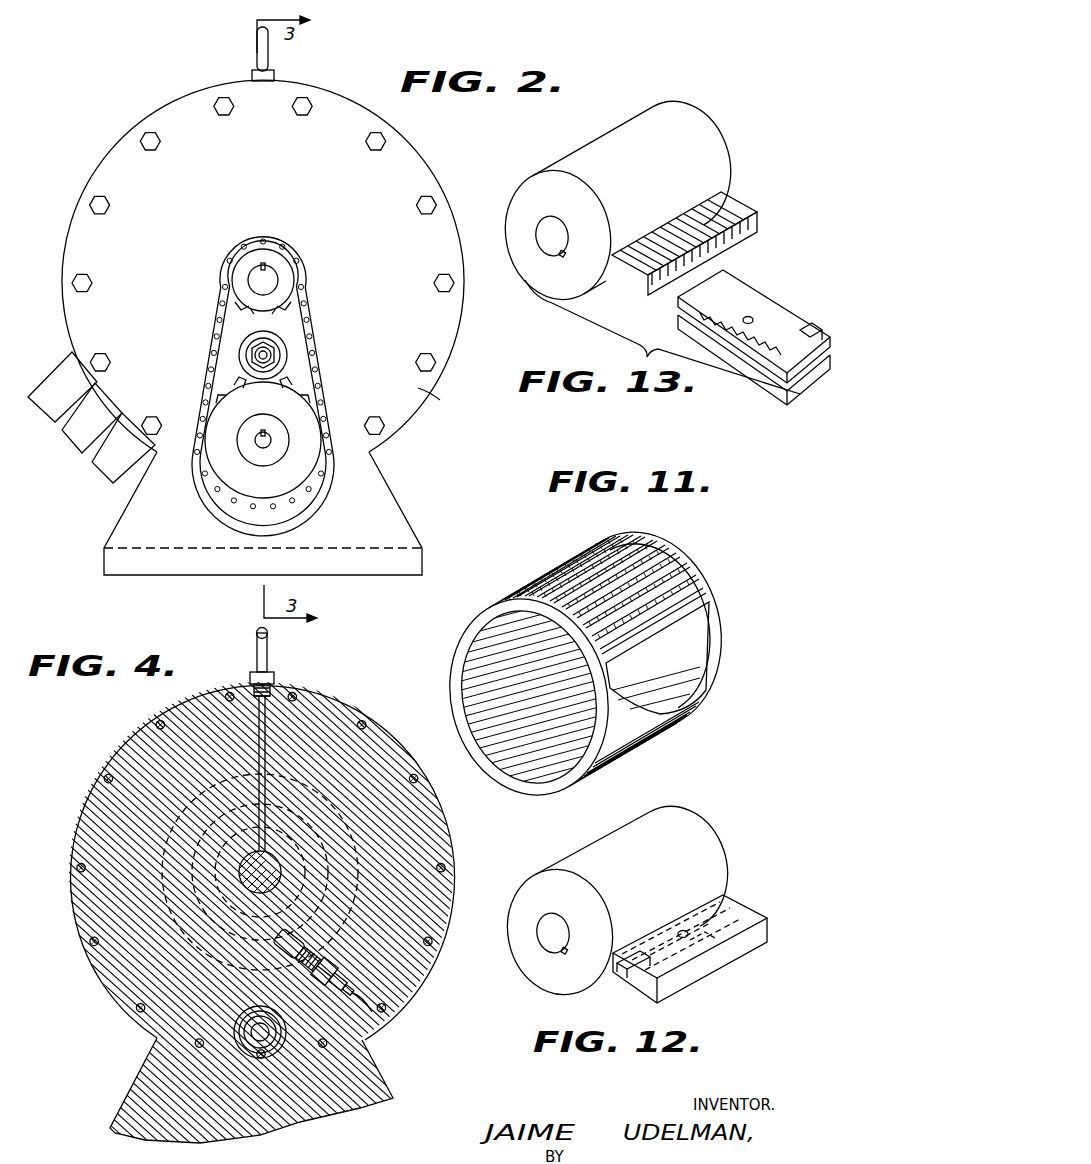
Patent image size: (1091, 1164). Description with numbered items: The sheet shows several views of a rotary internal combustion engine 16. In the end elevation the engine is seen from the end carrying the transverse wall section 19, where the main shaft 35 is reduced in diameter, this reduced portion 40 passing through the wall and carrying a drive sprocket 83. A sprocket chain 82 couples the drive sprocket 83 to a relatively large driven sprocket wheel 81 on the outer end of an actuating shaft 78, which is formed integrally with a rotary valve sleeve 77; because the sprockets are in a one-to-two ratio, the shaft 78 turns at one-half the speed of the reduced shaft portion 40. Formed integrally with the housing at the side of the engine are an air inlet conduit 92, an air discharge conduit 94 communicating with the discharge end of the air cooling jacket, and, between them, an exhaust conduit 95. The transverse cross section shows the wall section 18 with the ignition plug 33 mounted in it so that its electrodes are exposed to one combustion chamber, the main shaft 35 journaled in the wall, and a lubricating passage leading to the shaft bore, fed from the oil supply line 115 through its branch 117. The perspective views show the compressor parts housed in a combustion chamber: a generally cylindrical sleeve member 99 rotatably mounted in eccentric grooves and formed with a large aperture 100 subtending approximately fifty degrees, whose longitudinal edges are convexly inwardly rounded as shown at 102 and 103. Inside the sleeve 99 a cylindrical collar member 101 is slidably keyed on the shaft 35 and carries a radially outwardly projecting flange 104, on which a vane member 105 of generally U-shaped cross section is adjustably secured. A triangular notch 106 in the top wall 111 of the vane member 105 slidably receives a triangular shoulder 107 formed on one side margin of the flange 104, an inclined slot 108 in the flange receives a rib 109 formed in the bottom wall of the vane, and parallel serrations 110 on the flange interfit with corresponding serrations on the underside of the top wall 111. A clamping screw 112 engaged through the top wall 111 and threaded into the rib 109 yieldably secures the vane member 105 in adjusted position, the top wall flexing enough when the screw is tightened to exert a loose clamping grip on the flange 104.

In FIG. 2, the rotary internal combustion engine 16 is at (108, 146).
In FIG. 2, the wall section 19 is at (442, 402).
In FIG. 2, the reduced portion of main shaft 40 is at (273, 272).
In FIG. 2, the drive sprocket 83 is at (243, 272).
In FIG. 2, the sprocket chain 82 is at (320, 350).
In FIG. 2, the driven sprocket wheel 81 is at (228, 468).
In FIG. 2, the actuating shaft 78 is at (268, 443).
In FIG. 2, the air discharge conduit 94 is at (63, 370).
In FIG. 2, the exhaust conduit 95 is at (82, 432).
In FIG. 2, the air inlet conduit 92 is at (112, 463).
In FIG. 4, the wall section 18 is at (418, 890).
In FIG. 4, the branch of oil supply line 117 is at (270, 666).
In FIG. 4, the oil supply line 115 is at (258, 631).
In FIG. 4, the main shaft 35 is at (284, 868).
In FIG. 4, the clamping screw 112 is at (263, 797).
In FIG. 13, the clamping screw 112 is at (750, 316).
In FIG. 12, the clamping screw 112 is at (682, 930).
In FIG. 4, the rotary valve sleeve 77 is at (246, 1008).
In FIG. 4, the ignition plug 33 is at (372, 1012).
In FIG. 13, the cylindrical collar member 101 is at (690, 142).
In FIG. 12, the cylindrical collar member 101 is at (528, 968).
In FIG. 13, the flange 104 is at (760, 228).
In FIG. 12, the flange 104 is at (616, 964).
In FIG. 13, the serrations 110 is at (695, 216).
In FIG. 13, the inclined slot 108 is at (720, 207).
In FIG. 13, the triangular shoulder 107 is at (652, 290).
In FIG. 12, the triangular shoulder 107 is at (640, 980).
In FIG. 13, the vane member 105 is at (788, 302).
In FIG. 12, the vane member 105 is at (755, 908).
In FIG. 13, the triangular notch 106 is at (796, 329).
In FIG. 12, the triangular notch 106 is at (693, 949).
In FIG. 13, the rib 109 is at (740, 352).
In FIG. 13, the top wall 111 is at (730, 299).
In FIG. 11, the sleeve member 99 is at (640, 538).
In FIG. 11, the aperture 100 is at (690, 625).
In FIG. 11, the rounded longitudinal edge of aperture 102 is at (648, 626).
In FIG. 11, the rounded longitudinal edge of aperture 103 is at (682, 703).